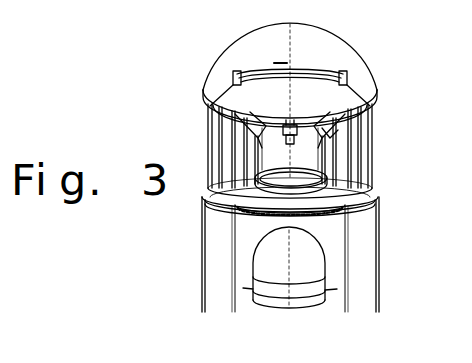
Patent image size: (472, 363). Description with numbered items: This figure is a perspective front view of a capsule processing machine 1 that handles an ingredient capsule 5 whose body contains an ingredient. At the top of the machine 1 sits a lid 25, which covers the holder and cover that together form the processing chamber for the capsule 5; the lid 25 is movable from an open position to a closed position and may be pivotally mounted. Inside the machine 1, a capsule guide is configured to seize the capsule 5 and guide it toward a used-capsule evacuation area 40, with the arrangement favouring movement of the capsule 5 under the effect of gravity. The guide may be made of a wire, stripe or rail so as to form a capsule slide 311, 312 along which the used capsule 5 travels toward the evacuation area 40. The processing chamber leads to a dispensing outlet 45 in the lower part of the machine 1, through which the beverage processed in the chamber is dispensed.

The capsule processing machine 1 is at (393, 53).
The lid 25 is at (290, 62).
The used-capsule evacuation area 40 is at (272, 159).
The capsule slide 312 is at (257, 132).
The capsule slide 311 is at (328, 132).
The ingredient capsule 5 is at (312, 197).
The dispensing outlet 45 is at (286, 308).